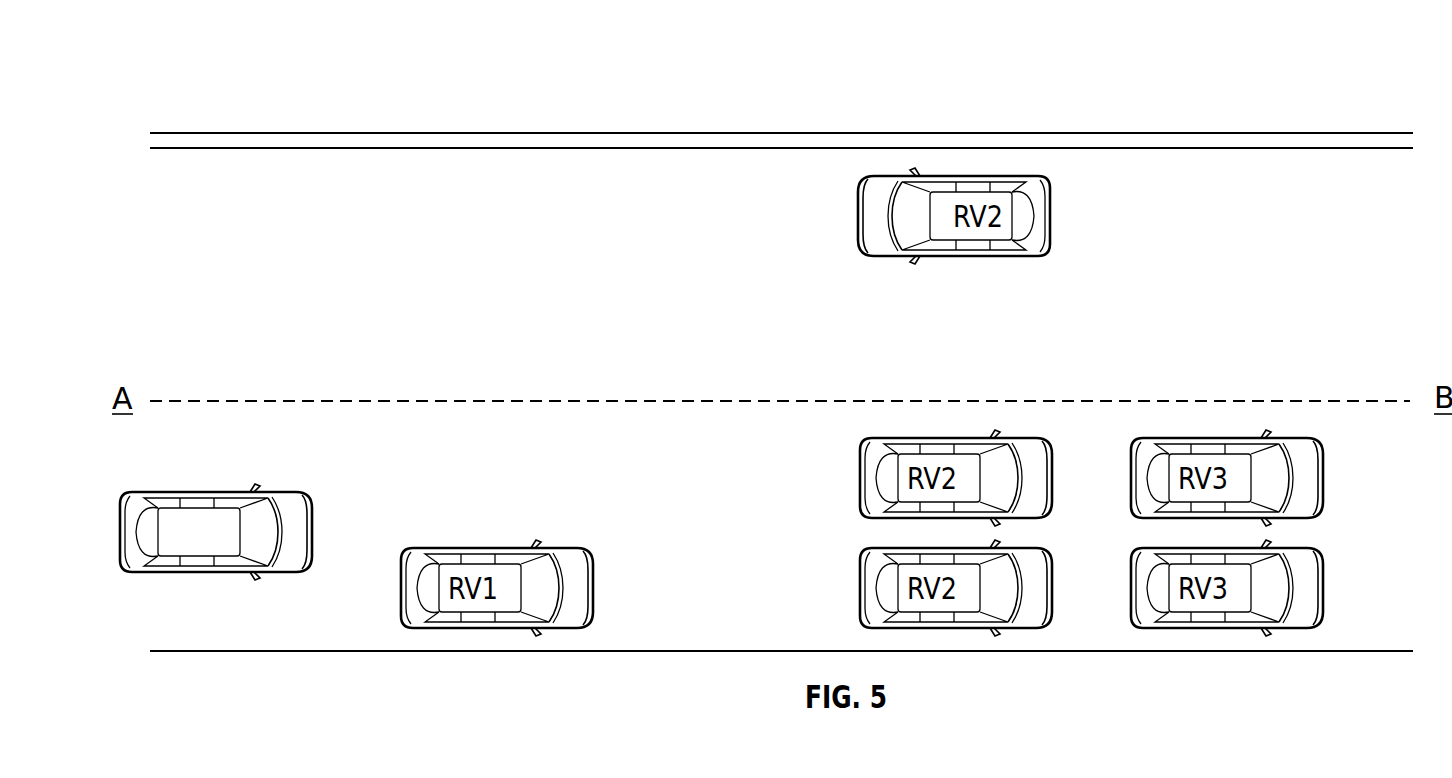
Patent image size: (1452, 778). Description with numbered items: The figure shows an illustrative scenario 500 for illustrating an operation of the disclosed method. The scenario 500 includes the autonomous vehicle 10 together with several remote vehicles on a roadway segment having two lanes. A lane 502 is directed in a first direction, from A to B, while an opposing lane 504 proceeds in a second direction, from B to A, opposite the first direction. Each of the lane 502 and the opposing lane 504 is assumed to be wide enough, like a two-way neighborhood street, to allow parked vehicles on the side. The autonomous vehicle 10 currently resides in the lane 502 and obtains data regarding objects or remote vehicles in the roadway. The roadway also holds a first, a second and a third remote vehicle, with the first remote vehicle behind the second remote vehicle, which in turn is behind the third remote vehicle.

The scenario 500 is at (161, 93).
The opposing lane 504 is at (200, 210).
The lane 502 is at (190, 465).
The autonomous vehicle 10 is at (199, 493).